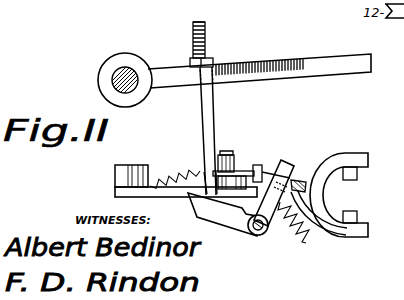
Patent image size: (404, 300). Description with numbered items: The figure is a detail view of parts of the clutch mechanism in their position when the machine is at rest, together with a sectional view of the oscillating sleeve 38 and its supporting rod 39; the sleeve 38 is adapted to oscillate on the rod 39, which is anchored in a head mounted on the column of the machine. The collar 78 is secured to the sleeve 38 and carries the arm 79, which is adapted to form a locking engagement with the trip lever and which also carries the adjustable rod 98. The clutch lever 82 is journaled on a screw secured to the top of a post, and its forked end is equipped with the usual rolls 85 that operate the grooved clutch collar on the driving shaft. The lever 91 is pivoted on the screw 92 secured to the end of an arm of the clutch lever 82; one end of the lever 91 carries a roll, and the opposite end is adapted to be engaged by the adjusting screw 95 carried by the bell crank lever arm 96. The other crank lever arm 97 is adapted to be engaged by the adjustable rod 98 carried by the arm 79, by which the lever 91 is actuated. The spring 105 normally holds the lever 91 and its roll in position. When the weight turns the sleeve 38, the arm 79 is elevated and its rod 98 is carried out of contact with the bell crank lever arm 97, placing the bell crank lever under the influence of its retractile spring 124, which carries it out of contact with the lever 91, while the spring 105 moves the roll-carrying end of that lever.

The collar 78 is at (107, 62).
The sleeve 38 is at (118, 74).
The rod 39 is at (117, 86).
The arm 79 is at (306, 58).
The adjustable rod 98 is at (213, 101).
The screw 92 is at (229, 151).
The lever 91 is at (248, 168).
The bell crank lever arm 96 is at (288, 162).
The clutch lever 82 is at (335, 154).
The rolls 85 is at (357, 216).
The adjusting screw 95 is at (335, 239).
The retractile spring 124 is at (306, 246).
The crank lever arm 97 is at (226, 222).
The spring 105 is at (201, 172).